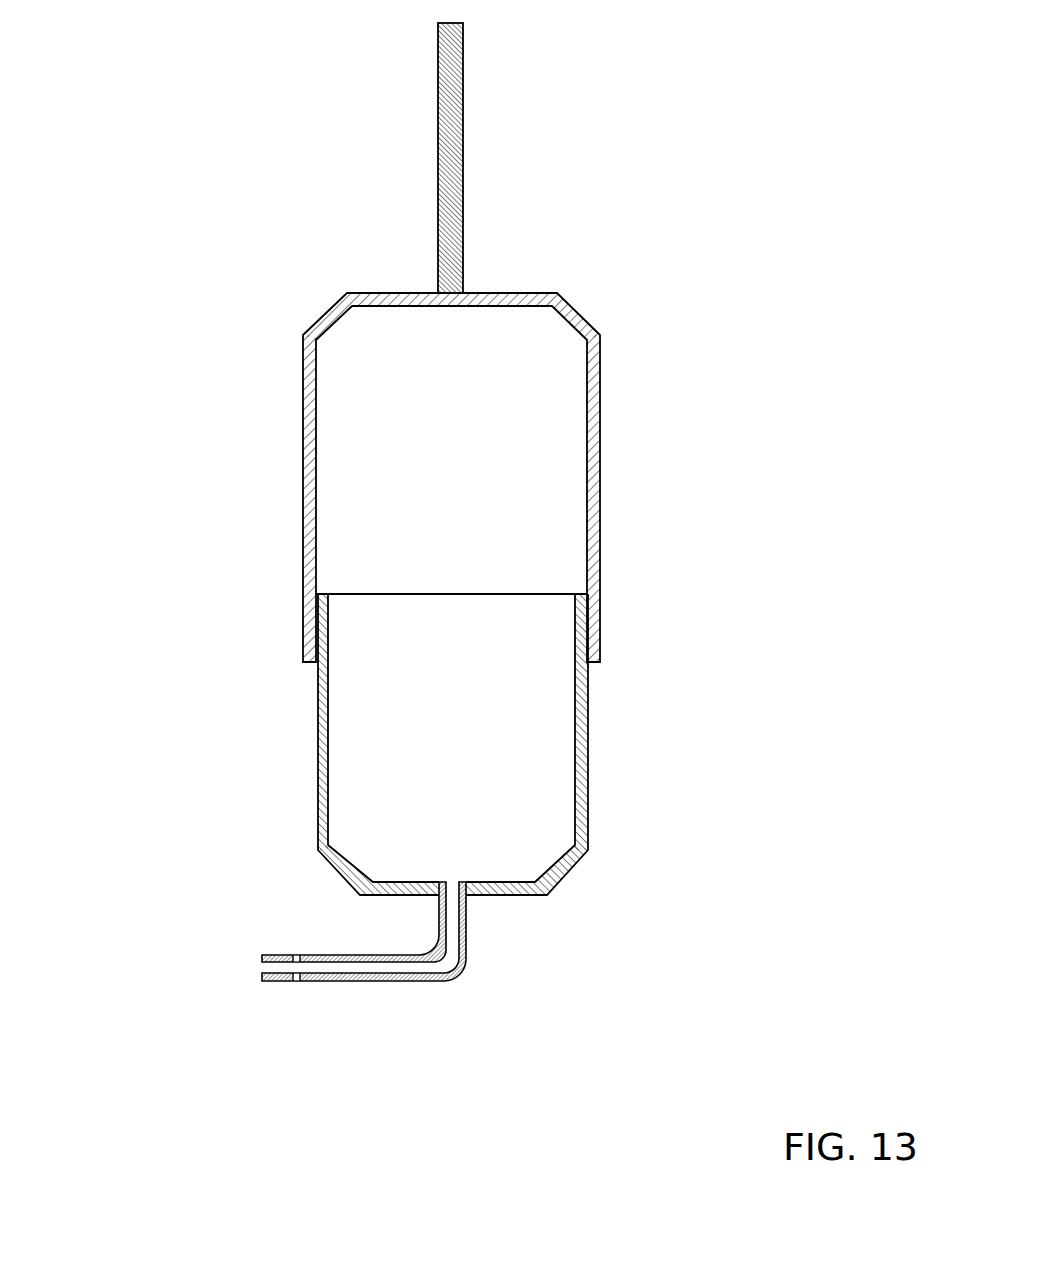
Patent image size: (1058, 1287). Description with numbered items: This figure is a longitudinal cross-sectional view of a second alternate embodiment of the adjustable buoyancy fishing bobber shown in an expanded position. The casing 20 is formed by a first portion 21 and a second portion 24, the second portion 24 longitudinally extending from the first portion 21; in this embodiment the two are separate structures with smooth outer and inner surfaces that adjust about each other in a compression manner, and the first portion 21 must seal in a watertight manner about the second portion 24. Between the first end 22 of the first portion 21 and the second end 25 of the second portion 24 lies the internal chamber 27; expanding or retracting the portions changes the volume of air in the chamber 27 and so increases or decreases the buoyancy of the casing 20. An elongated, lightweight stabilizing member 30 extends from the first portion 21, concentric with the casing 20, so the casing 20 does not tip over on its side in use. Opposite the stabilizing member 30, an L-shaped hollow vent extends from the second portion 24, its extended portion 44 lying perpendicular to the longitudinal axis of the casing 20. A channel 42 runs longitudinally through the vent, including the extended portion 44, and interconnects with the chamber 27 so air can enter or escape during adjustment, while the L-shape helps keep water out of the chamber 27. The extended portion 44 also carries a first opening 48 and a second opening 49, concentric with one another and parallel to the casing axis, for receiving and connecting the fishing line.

The casing 20 is at (451, 444).
The first portion 21 is at (303, 370).
The first end 22 is at (502, 293).
The second portion 24 is at (416, 781).
The second end 25 is at (505, 895).
The chamber 27 is at (348, 553).
The stabilizing member 30 is at (463, 77).
The channel 42 is at (364, 978).
The extended portion 44 is at (265, 982).
The first opening 48 is at (297, 957).
The second opening 49 is at (297, 982).